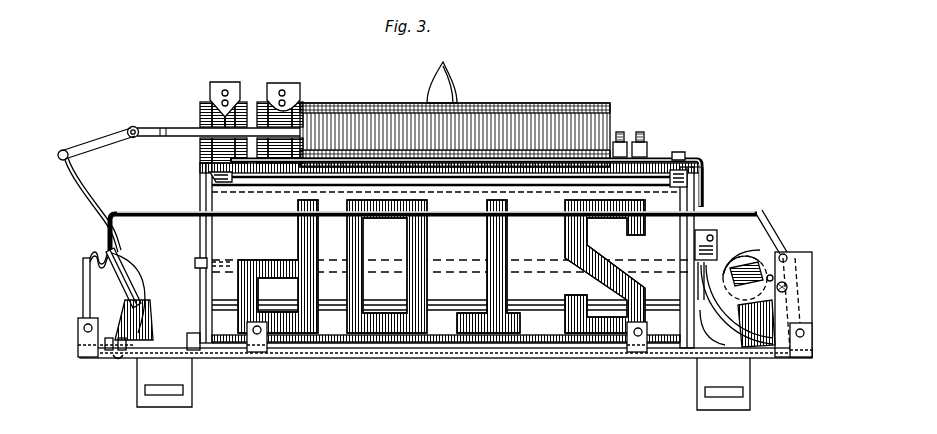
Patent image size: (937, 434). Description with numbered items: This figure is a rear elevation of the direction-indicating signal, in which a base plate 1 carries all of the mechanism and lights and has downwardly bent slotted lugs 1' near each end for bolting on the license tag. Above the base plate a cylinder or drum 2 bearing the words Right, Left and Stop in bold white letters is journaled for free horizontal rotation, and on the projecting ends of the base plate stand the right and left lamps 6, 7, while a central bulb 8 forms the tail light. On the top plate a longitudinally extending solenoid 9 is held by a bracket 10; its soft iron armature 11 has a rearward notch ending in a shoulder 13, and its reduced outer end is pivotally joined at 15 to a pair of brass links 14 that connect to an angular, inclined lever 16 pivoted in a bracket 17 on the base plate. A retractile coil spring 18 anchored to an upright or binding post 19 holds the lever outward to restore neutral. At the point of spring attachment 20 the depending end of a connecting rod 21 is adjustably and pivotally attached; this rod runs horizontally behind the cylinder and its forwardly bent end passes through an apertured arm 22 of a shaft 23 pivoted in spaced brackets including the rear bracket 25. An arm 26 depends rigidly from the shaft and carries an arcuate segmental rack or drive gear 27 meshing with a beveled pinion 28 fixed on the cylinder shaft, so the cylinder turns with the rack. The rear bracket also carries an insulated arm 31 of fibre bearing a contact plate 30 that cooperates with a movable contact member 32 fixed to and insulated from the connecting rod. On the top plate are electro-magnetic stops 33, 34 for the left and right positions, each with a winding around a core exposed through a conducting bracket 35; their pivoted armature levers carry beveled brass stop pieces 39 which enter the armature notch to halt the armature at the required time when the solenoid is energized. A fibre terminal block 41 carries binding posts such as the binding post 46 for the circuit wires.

The base plate 1 is at (446, 368).
The slotted lugs 1' is at (456, 384).
The cylinder or drum 2 is at (560, 340).
The right lamp 6 is at (137, 278).
The left lamp 7 is at (753, 260).
The tail light bulb 8 is at (455, 80).
The solenoid 9 is at (560, 103).
The bracket 10 is at (650, 163).
The armature 11 is at (177, 128).
The shoulder 13 is at (167, 140).
The links 14 is at (92, 147).
The pivotal connection 15 is at (134, 126).
The lever 16 is at (83, 187).
The bracket 17 is at (118, 358).
The retractile coil spring 18 is at (97, 253).
The upright or binding post 19 is at (88, 292).
The connecting point 20 is at (118, 255).
The connecting rod 21 is at (152, 210).
The apertured arm 22 is at (758, 215).
The shaft 23 is at (795, 254).
The rear bracket 25 is at (793, 257).
The arm 26 is at (800, 317).
The segmental rack or drive gear 27 is at (727, 300).
The beveled pinion 28 is at (707, 288).
The contact plate 30 is at (772, 260).
The insulated arm 31 is at (787, 287).
The movable contact member 32 is at (693, 243).
The electro-magnetic stop 33 is at (290, 83).
The electro-magnetic stop 34 is at (230, 80).
The bracket 35 is at (265, 166).
The stop pieces 39 is at (227, 113).
The terminal block 41 is at (645, 140).
The binding post 46 is at (620, 133).